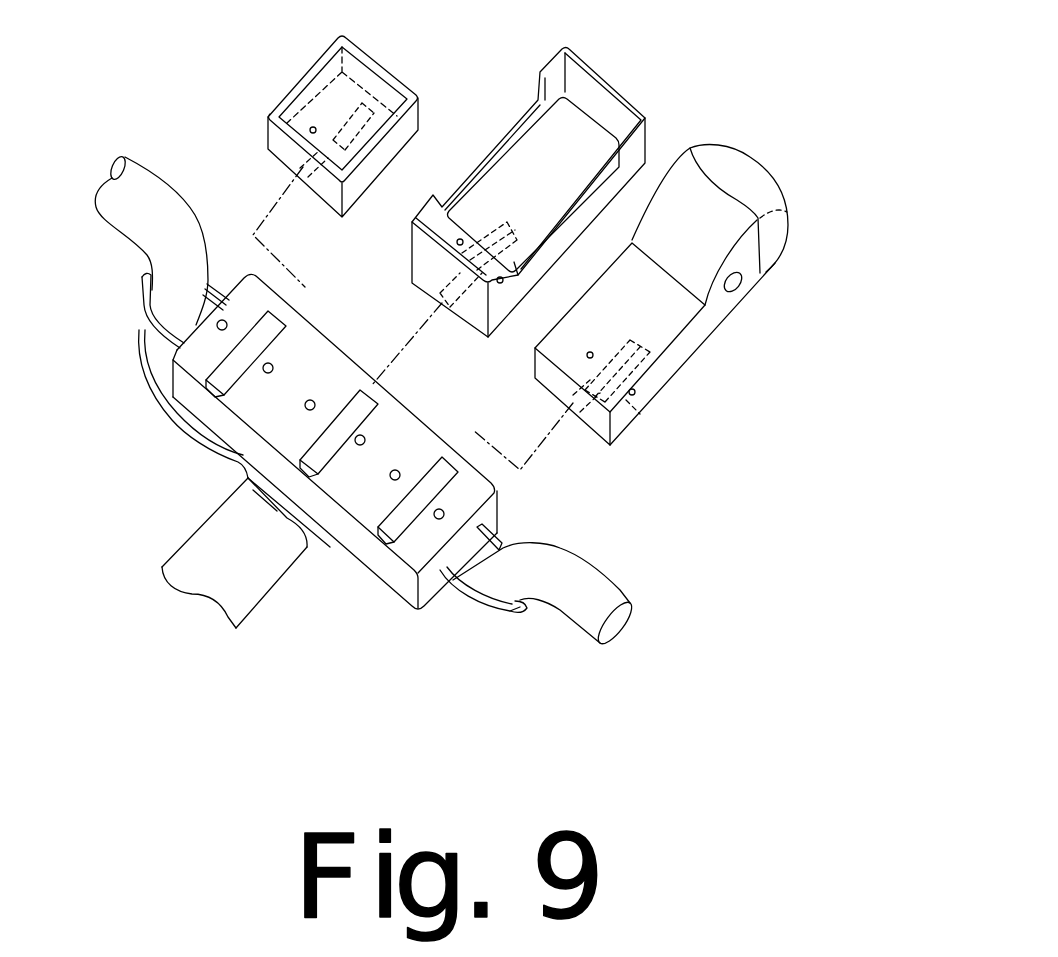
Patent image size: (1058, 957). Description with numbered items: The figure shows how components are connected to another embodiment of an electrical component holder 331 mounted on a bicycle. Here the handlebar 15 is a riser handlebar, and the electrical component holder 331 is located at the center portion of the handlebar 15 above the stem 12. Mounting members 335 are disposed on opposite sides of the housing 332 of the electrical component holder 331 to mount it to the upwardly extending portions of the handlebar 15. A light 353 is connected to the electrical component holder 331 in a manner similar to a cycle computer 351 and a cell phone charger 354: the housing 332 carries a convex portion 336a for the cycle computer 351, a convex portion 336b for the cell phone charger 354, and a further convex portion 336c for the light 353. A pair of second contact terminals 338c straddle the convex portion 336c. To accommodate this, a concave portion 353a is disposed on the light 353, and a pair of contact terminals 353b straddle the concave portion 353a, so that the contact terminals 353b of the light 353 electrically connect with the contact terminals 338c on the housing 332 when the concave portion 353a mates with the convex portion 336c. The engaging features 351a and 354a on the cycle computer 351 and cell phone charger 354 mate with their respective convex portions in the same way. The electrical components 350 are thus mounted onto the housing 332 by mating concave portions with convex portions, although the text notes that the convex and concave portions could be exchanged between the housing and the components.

The stem 12 is at (243, 583).
The handlebar 15 is at (602, 595).
The electrical component holder 331 is at (512, 520).
The housing 332 is at (365, 553).
The mounting member 335 is at (157, 340).
The convex portion 336a is at (257, 330).
The convex portion 336b is at (343, 400).
The convex portion 336c is at (437, 475).
The second contact terminal 338c is at (404, 460).
The electrical component 350 is at (793, 43).
The cycle computer 351 is at (398, 63).
The engaging projection 351a is at (282, 187).
The light 353 is at (783, 157).
The concave portion 353a is at (567, 413).
The contact terminal 353b is at (632, 395).
The cell phone charger 354 is at (640, 75).
The engaging projection 354a is at (432, 305).